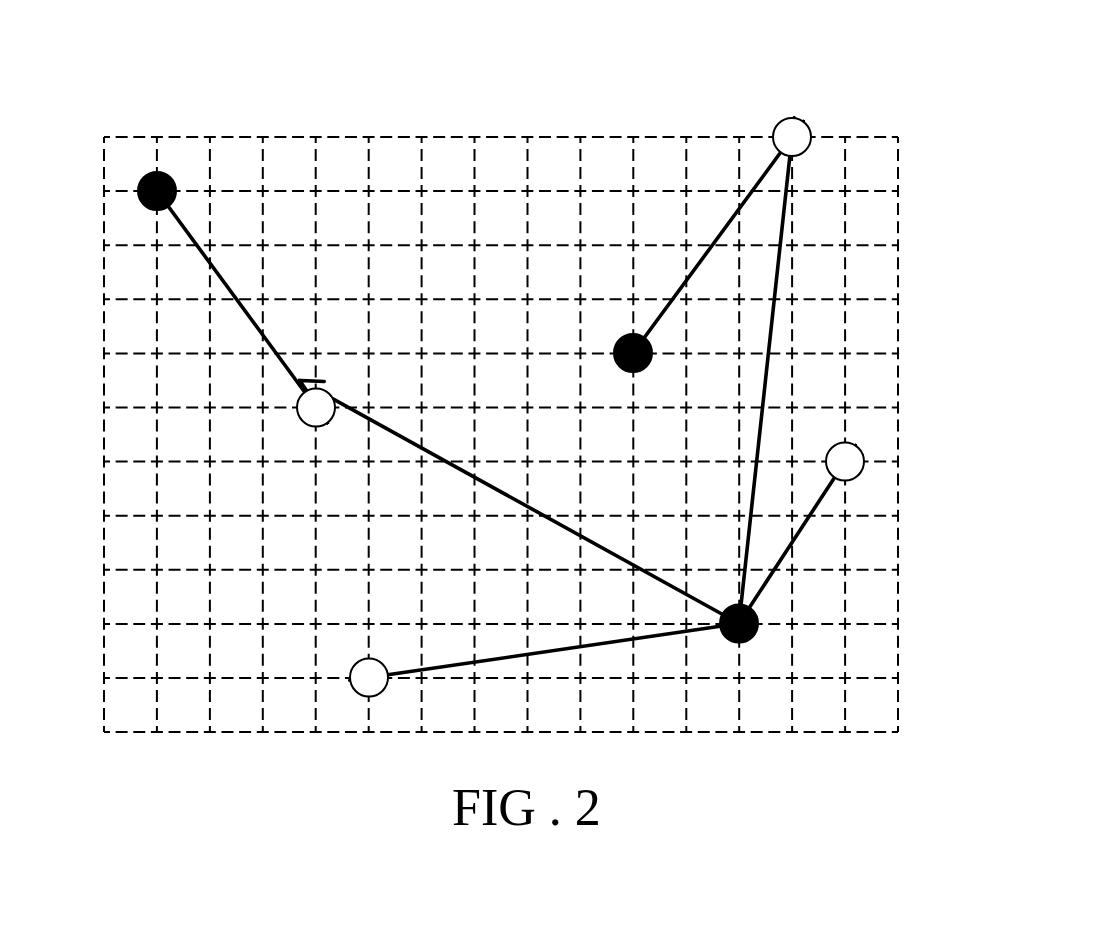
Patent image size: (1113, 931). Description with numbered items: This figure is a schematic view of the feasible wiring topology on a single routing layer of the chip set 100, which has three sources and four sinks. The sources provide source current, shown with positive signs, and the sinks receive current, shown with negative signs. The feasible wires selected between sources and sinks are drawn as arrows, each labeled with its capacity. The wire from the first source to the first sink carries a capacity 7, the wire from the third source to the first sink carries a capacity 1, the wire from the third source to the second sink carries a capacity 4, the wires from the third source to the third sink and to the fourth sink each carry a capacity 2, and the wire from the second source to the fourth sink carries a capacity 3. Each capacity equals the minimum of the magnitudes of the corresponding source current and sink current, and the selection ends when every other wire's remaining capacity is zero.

The chip set 100 is at (916, 98).
The edge from S1 to t1 with flow 7 is at (231, 291).
The edge from S3 to t1 with flow 1 is at (536, 511).
The edge from S3 to t2 with flow 4 is at (563, 630).
The edges from S3 to t3 and t4 with flow 2 is at (787, 390).
The edge from S2 to t4 with flow 3 is at (707, 252).